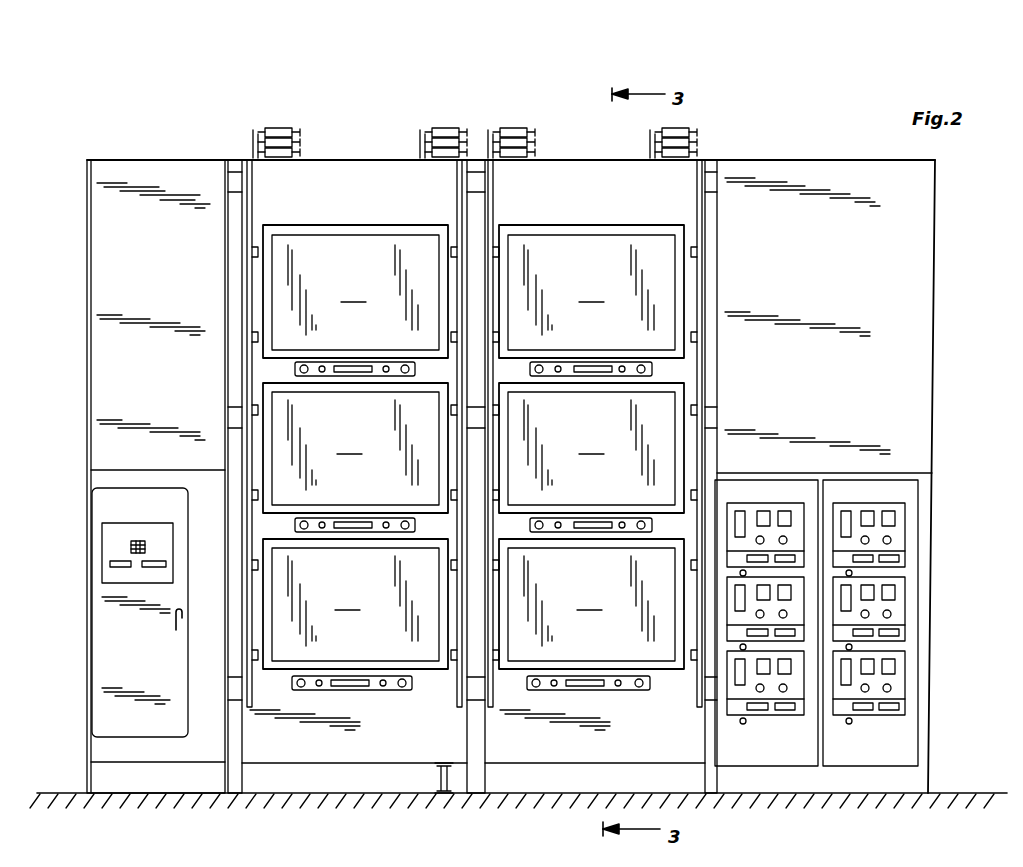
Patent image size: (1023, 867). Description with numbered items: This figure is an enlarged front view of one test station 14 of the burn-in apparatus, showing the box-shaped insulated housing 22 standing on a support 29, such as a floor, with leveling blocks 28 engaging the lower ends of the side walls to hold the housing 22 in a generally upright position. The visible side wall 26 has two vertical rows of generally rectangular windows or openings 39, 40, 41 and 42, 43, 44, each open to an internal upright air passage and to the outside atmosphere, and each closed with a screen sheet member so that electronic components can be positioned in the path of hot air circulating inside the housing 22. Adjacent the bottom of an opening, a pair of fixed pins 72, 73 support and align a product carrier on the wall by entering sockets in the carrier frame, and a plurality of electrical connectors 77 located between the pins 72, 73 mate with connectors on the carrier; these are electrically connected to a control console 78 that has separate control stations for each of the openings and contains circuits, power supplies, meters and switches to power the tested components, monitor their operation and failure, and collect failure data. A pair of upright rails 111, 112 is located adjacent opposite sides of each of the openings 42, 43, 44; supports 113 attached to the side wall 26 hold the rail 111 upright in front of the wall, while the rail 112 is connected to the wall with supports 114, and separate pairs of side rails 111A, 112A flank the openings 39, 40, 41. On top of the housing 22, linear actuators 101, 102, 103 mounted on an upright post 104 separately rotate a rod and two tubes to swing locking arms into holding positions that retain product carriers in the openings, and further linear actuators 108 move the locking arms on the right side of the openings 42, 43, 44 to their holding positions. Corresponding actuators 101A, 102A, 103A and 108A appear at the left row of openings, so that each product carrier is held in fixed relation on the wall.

The test station 14 is at (797, 147).
The housing 22 is at (890, 288).
The side wall 26 is at (152, 168).
The leveling blocks 28 is at (456, 780).
The support 29 is at (57, 793).
The opening 39 is at (355, 300).
The opening 40 is at (355, 457).
The opening 41 is at (355, 614).
The opening 42 is at (591, 300).
The opening 43 is at (591, 457).
The opening 44 is at (591, 604).
The fixed pin 72 is at (536, 692).
The fixed pin 73 is at (639, 692).
The electrical connectors 77 is at (562, 692).
The control console 78 is at (922, 740).
The linear actuator 101 is at (514, 126).
The connector fixture 101A is at (280, 126).
The linear actuator 102 is at (536, 142).
The connector 102A is at (300, 140).
The linear actuator 103 is at (536, 152).
The connector 103A is at (300, 152).
The upright post 104 is at (538, 132).
The linear actuators 108 is at (697, 127).
The connector fixture 108A is at (437, 127).
The upright rail 111 is at (493, 200).
The upright side rail 111A is at (252, 200).
The upright rail 112 is at (697, 200).
The upright side rail 112A is at (457, 200).
The support 113 is at (470, 702).
The supports 114 is at (717, 420).